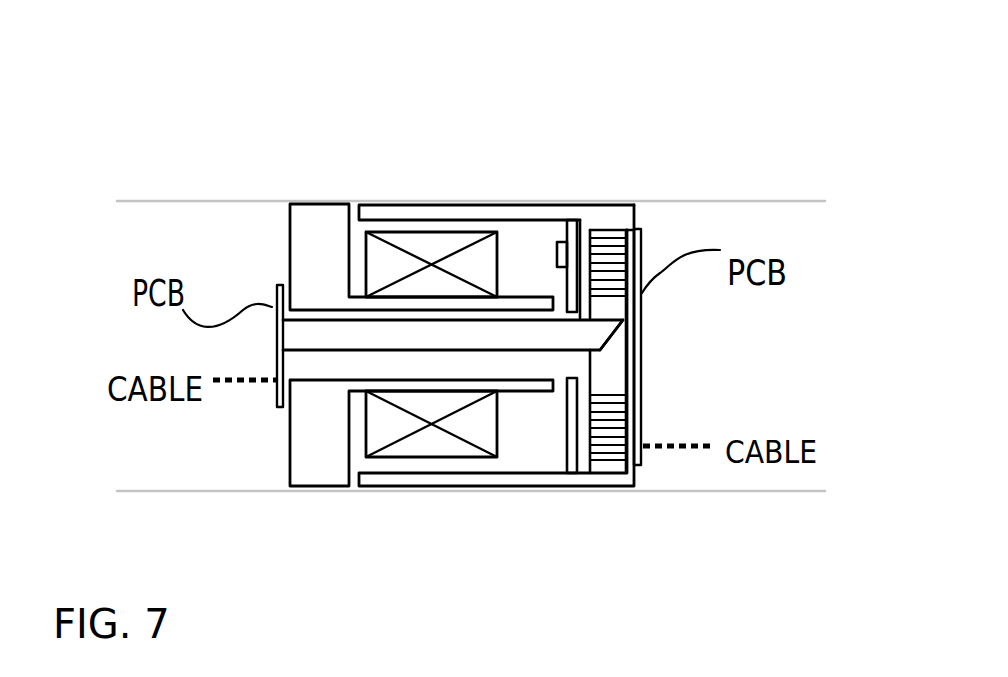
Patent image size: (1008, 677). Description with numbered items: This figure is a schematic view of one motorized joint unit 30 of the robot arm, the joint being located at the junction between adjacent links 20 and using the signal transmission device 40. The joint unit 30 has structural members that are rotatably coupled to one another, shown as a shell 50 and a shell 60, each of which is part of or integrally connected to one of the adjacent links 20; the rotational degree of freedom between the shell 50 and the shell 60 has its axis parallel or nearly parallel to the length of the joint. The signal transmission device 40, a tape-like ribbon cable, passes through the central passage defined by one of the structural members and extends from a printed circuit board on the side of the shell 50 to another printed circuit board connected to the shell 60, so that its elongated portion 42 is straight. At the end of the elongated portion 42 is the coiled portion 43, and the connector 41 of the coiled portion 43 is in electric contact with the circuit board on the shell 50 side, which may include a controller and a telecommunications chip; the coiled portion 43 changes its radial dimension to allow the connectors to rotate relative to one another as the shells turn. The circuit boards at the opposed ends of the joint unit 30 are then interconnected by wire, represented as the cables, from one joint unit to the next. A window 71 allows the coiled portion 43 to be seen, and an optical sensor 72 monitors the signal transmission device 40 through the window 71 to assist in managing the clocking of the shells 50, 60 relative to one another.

The link 20 is at (213, 202).
The motorized joint unit 30 is at (535, 148).
The signal transmission device 40 is at (622, 349).
The connector 41 is at (640, 230).
The elongated portion 42 is at (440, 346).
The coiled portion 43 is at (615, 385).
The shell 50 is at (513, 486).
The shell 60 is at (320, 486).
The window 71 is at (573, 243).
The optical sensor 72 is at (557, 255).